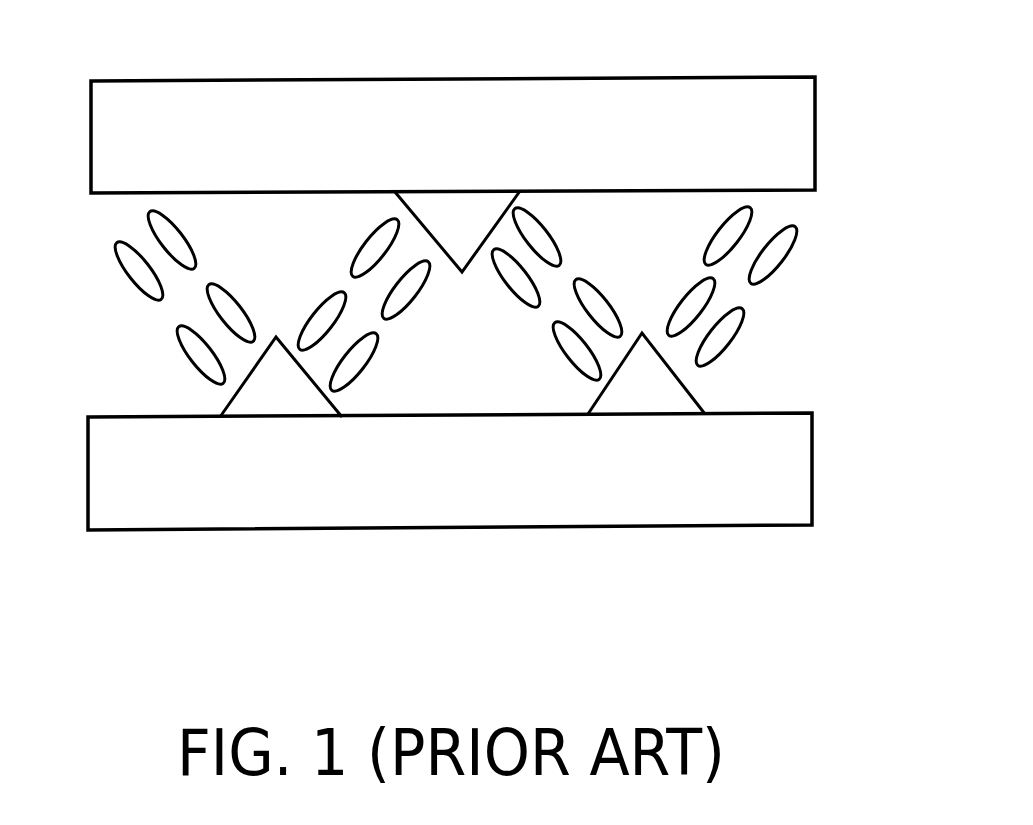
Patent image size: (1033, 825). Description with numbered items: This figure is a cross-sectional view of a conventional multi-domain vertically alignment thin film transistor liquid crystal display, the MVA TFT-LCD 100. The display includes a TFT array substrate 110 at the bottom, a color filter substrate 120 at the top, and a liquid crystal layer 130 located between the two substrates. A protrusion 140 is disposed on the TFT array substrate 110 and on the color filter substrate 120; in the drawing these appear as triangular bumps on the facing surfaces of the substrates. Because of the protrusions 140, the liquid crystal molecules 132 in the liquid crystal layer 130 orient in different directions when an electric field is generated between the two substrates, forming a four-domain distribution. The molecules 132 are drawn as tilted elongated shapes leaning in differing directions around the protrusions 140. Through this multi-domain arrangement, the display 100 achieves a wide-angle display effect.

The MVA TFT-LCD 100 is at (487, 337).
The TFT array substrate 110 is at (783, 470).
The color filter substrate 120 is at (788, 137).
The liquid crystal layer 130 is at (522, 299).
The liquid crystal molecules 132 is at (782, 243).
The protrusion 140 is at (457, 213).